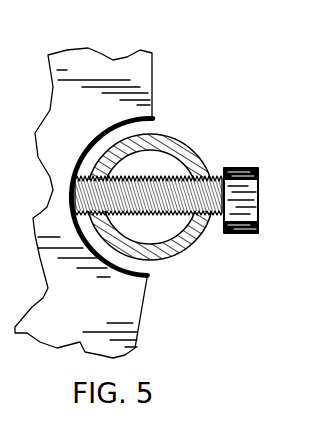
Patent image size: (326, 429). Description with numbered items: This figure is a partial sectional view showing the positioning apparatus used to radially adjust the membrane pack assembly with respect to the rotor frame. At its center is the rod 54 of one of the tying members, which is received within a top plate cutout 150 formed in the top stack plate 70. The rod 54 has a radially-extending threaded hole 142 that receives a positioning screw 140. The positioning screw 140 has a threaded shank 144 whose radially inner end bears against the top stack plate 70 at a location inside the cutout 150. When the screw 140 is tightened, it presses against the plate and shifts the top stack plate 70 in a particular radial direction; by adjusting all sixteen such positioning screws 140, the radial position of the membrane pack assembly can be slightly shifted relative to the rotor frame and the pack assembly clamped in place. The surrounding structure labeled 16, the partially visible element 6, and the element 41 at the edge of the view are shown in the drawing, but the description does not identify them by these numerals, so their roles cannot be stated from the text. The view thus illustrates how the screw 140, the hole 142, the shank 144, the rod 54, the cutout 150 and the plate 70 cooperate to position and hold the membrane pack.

The housing block 16 is at (152, 51).
The top stack plate 70 is at (153, 66).
The rod 54 is at (170, 152).
The threaded shank 144 is at (142, 176).
The top plate cutout 150 is at (140, 278).
The threaded hole 142 is at (205, 177).
The positioning screw 140 is at (231, 234).
The bolt head 6 is at (68, 190).
The frame member 41 is at (0, 12).